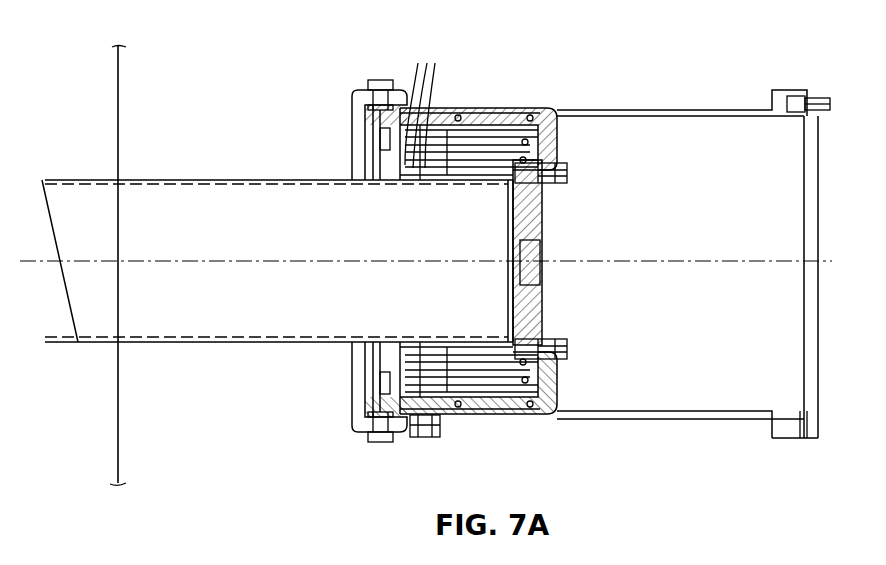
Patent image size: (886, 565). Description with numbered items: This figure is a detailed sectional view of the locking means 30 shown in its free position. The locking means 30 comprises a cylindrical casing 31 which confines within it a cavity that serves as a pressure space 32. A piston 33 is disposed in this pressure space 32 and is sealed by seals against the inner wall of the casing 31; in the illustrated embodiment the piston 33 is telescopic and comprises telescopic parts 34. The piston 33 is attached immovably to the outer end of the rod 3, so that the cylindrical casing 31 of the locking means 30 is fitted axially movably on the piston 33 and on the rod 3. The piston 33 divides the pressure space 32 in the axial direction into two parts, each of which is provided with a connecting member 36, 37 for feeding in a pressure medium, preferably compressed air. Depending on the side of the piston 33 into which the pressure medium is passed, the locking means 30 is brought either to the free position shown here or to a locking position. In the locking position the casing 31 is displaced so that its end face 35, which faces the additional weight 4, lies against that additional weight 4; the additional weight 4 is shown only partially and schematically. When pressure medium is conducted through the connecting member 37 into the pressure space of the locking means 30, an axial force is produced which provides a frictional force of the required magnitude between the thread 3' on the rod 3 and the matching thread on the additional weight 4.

The rod 3 is at (277, 241).
The thread 3' is at (276, 238).
The additional weight 4 is at (120, 65).
The locking means 30 is at (568, 62).
The cylindrical casing 31 is at (637, 108).
The pressure space 32 is at (714, 148).
The piston 33 is at (487, 107).
The telescopic parts 34 is at (423, 101).
The end face 35 is at (350, 128).
The connecting member 36 is at (787, 428).
The connecting member 37 is at (432, 433).